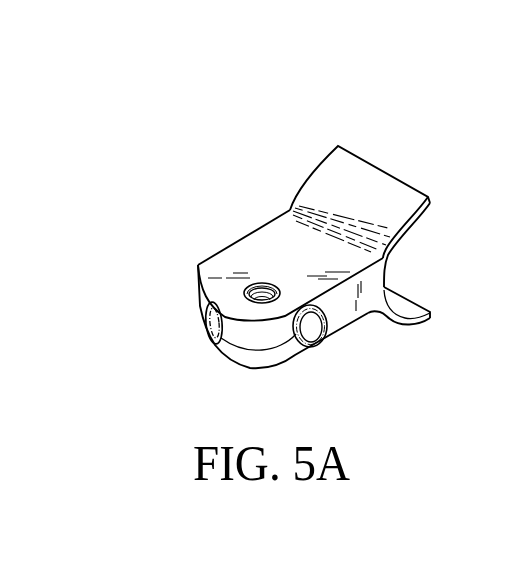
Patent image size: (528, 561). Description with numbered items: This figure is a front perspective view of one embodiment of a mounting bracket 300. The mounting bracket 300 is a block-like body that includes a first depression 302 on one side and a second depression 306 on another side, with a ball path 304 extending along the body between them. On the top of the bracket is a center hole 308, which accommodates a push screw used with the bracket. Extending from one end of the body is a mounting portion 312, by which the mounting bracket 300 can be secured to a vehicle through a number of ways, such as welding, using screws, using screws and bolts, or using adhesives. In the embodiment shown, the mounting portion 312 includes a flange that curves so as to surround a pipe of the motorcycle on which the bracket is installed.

The mounting bracket 300 is at (250, 140).
The first depression 302 is at (206, 319).
The ball path 304 is at (245, 343).
The second depression 306 is at (329, 332).
The center hole 308 is at (259, 288).
The mounting portion 312 is at (422, 324).